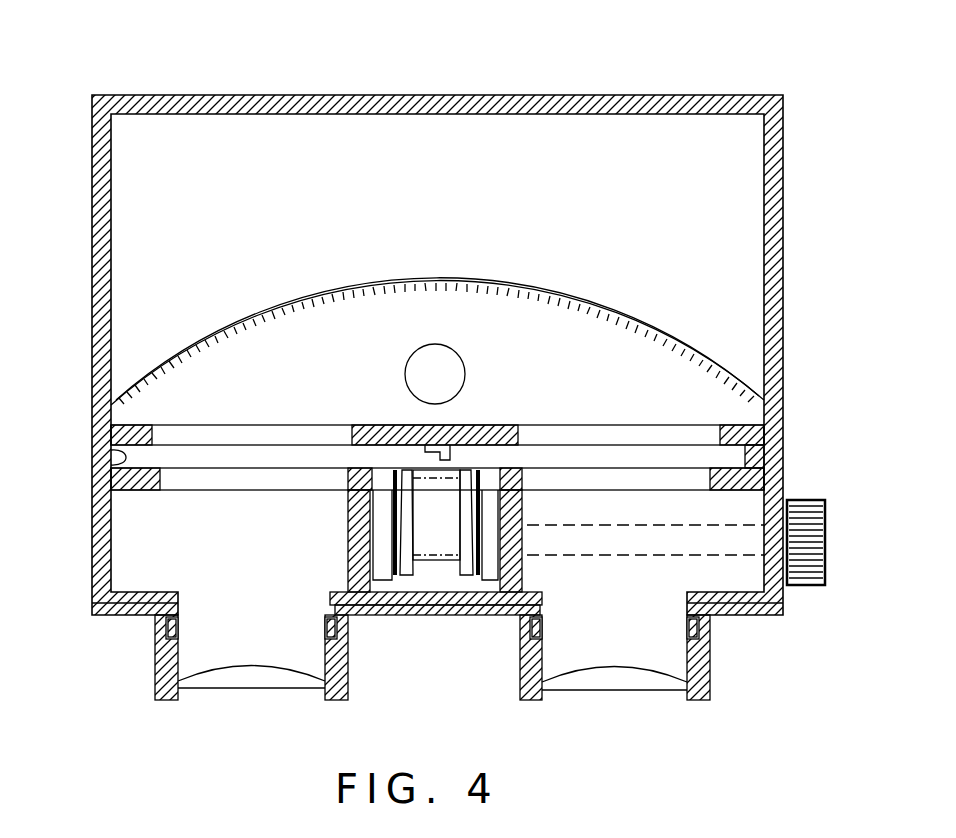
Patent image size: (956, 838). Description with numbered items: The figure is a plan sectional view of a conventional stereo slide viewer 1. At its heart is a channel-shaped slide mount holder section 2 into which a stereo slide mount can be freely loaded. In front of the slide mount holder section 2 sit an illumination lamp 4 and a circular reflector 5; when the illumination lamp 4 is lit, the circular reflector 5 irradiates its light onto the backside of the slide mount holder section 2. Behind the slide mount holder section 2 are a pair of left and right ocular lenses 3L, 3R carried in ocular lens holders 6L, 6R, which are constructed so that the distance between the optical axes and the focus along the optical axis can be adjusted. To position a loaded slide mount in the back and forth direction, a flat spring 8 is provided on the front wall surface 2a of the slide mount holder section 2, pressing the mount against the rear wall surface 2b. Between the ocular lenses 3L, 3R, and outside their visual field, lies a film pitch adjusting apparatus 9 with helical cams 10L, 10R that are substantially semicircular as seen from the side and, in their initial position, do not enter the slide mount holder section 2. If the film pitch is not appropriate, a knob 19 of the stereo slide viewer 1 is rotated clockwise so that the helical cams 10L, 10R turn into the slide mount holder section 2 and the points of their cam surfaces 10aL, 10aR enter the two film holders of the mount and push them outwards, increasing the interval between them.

The stereo slide viewer 1 is at (279, 78).
The slide mount holder section 2 is at (445, 450).
The front wall surface 2a is at (746, 452).
The rear wall surface 2b is at (746, 472).
The left ocular lens 3L is at (250, 690).
The right ocular lens 3R is at (622, 692).
The illumination lamp 4 is at (463, 360).
The circular reflector 5 is at (268, 325).
The left ocular lens holder 6L is at (155, 655).
The right ocular lens holder 6R is at (710, 656).
The flat spring 8 is at (450, 455).
The film pitch adjusting apparatus 9 is at (437, 585).
The left helical cam 10L is at (398, 582).
The right helical cam 10R is at (478, 582).
The left cam surface 10aL is at (395, 470).
The right cam surface 10aR is at (480, 476).
The knob 19 is at (808, 503).